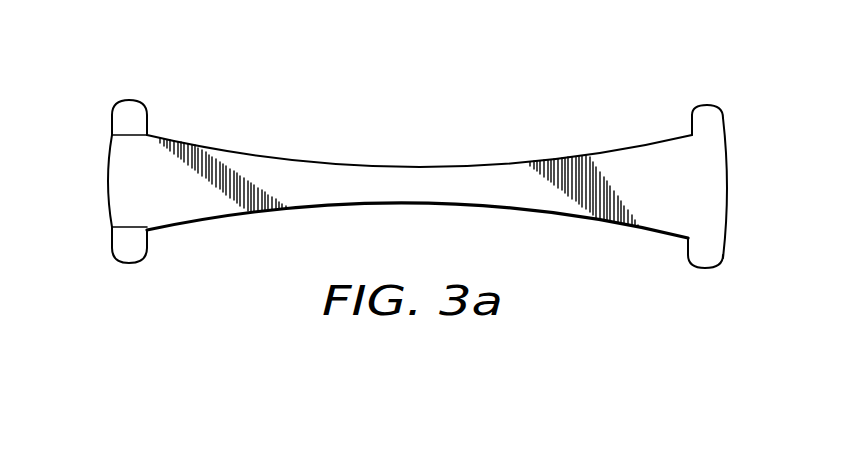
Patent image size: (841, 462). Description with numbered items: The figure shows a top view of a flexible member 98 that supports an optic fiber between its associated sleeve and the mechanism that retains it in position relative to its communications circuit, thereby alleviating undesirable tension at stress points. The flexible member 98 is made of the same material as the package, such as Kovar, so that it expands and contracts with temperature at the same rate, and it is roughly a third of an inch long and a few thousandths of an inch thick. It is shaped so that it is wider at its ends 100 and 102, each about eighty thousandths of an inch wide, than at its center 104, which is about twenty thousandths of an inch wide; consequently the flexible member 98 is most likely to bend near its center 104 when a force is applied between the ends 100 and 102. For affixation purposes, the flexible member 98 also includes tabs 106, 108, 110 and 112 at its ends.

The flexible member 98 is at (545, 64).
The end 100 is at (108, 183).
The end 102 is at (728, 195).
The center 104 is at (412, 153).
The tab 106 is at (130, 110).
The tab 108 is at (127, 250).
The tab 110 is at (705, 117).
The tab 112 is at (706, 258).